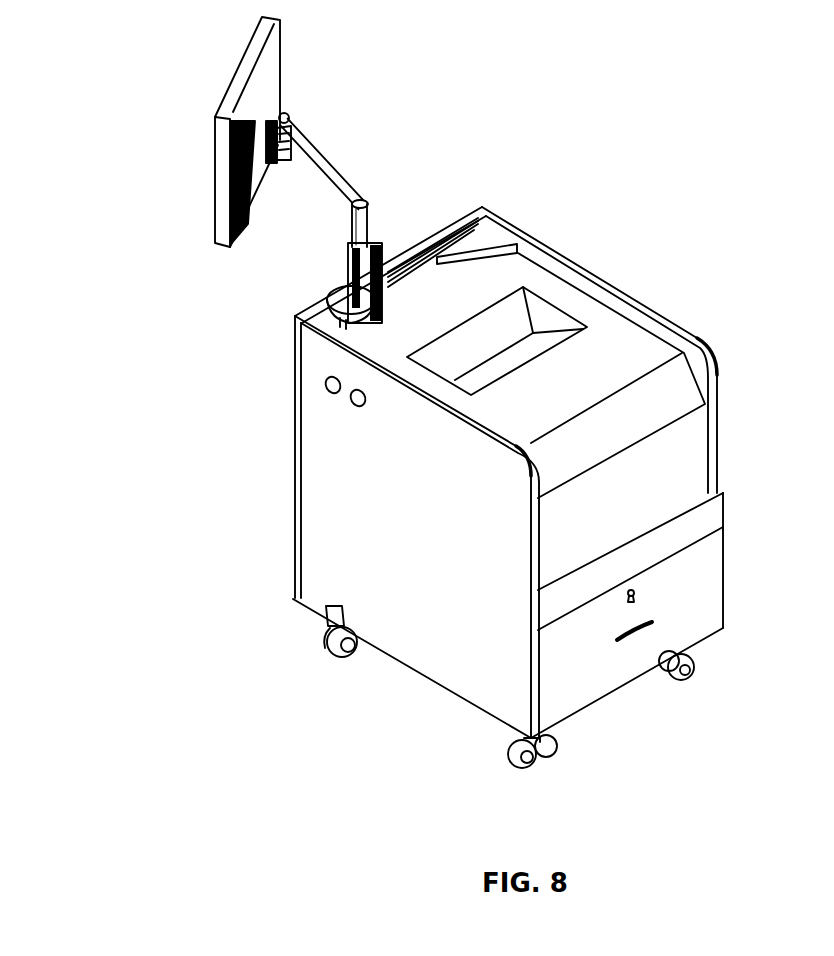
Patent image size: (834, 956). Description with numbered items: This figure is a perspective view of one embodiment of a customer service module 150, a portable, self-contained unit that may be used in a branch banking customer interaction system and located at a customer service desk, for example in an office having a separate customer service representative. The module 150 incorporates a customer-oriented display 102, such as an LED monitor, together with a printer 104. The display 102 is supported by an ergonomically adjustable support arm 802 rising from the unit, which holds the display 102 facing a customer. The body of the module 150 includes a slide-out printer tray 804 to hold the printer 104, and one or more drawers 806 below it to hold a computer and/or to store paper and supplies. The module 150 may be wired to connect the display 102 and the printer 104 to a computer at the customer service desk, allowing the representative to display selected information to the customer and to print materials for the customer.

The customer service module 150 is at (600, 131).
The customer-oriented display 102 is at (213, 160).
The ergonomically adjustable support arm 802 is at (333, 161).
The printer 104 is at (637, 335).
The slide-out printer tray 804 is at (710, 518).
The drawers 806 is at (697, 594).